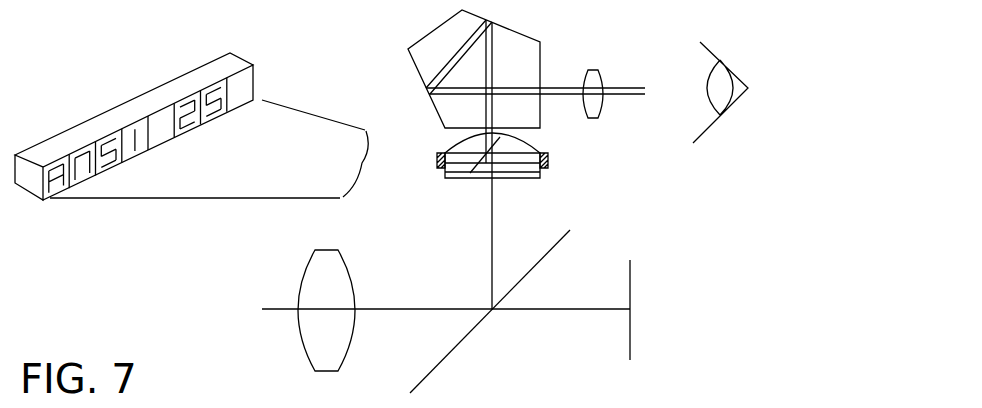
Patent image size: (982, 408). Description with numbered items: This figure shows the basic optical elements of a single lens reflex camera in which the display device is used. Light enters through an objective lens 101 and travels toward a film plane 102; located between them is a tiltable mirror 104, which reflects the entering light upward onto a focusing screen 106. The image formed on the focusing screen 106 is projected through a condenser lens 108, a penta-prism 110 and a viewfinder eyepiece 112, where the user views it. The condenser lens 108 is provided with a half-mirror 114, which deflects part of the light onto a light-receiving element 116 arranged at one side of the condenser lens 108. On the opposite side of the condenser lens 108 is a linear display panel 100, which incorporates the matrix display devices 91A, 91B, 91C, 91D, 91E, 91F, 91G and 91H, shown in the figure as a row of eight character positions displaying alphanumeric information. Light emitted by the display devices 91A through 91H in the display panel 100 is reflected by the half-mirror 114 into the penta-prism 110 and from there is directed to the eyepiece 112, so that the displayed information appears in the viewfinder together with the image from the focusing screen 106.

The matrix display device 91A is at (58, 193).
The matrix display device 91B is at (80, 180).
The matrix display device 91C is at (120, 167).
The matrix display device 91D is at (143, 152).
The matrix display device 91E is at (155, 120).
The matrix display device 91F is at (198, 122).
The matrix display device 91G is at (223, 110).
The matrix display device 91H is at (245, 88).
The display panel 100 is at (242, 63).
The objective lens 101 is at (347, 270).
The film plane 102 is at (625, 332).
The tiltable mirror 104 is at (465, 332).
The focusing screen 106 is at (535, 178).
The condenser lens 108 is at (457, 147).
The penta-prism 110 is at (538, 33).
The viewfinder eyepiece 112 is at (603, 82).
The half-mirror 114 is at (500, 138).
The light-receiving element 116 is at (547, 158).